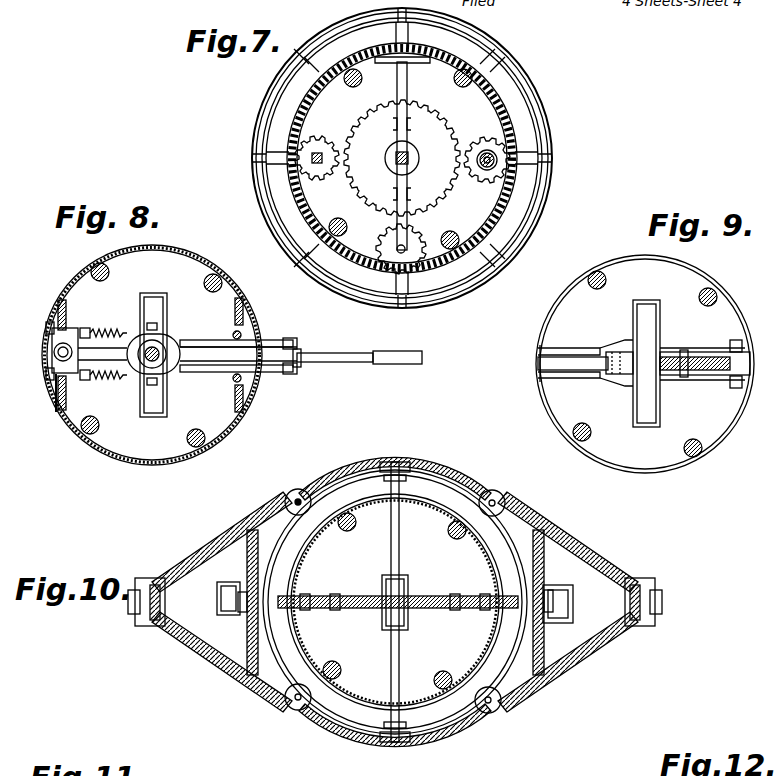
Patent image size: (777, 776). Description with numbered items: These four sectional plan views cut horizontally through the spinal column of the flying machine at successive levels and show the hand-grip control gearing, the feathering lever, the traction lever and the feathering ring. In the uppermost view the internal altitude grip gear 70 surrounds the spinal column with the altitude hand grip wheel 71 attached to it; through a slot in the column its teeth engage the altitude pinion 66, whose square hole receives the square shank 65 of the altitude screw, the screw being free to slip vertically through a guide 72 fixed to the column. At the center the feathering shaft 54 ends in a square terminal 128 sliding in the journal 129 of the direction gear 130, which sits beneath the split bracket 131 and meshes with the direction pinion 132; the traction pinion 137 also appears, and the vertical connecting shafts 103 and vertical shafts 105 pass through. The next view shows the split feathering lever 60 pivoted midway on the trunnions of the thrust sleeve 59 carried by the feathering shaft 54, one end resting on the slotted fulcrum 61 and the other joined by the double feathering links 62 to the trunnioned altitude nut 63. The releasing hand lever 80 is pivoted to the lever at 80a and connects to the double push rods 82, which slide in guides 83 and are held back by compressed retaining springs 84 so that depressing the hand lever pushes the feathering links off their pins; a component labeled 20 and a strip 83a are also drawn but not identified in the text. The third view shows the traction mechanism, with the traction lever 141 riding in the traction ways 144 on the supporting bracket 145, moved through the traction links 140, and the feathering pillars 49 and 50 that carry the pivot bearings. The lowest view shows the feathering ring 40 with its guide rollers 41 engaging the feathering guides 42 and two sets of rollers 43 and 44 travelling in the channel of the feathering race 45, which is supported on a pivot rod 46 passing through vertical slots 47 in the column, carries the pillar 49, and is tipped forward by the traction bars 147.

In FIG. 7, the casing plate 20 is at (306, 112).
In FIG. 8, the casing plate 20 is at (148, 462).
In FIG. 9, the casing plate 20 is at (643, 470).
In FIG. 10, the casing plate 20 is at (304, 540).
In FIG. 10, the feathering ring 40 is at (580, 655).
In FIG. 10, the guide rollers 41 is at (550, 592).
In FIG. 10, the feathering guides 42 is at (573, 604).
In FIG. 10, the rollers 43 is at (410, 740).
In FIG. 10, the rollers 44 is at (492, 712).
In FIG. 10, the feathering race 45 is at (352, 730).
In FIG. 10, the pivot rod 46 is at (400, 642).
In FIG. 10, the vertical slots 47 is at (390, 720).
In FIG. 9, the feathering pillars 49 is at (648, 300).
In FIG. 10, the feathering pillars 49 is at (408, 582).
In FIG. 8, the feathering pillars 50 is at (153, 293).
In FIG. 8, the feathering shaft 54 is at (158, 360).
In FIG. 8, the thrust sleeve 59 is at (162, 340).
In FIG. 8, the feathering lever 60 is at (148, 335).
In FIG. 8, the slotted fulcrum 61 is at (222, 345).
In FIG. 8, the double feathering links 62 is at (50, 380).
In FIG. 8, the altitude nut 63 is at (56, 400).
In FIG. 7, the square shank 65 is at (312, 156).
In FIG. 7, the altitude pinion 66 is at (308, 165).
In FIG. 7, the altitude grip gear 70 is at (504, 90).
In FIG. 7, the altitude hand grip wheel 71 is at (540, 118).
In FIG. 8, the guide 72 is at (54, 356).
In FIG. 8, the releasing hand lever 80 is at (396, 365).
In FIG. 8, the pivot 80a is at (298, 368).
In FIG. 8, the double push rods 82 is at (275, 374).
In FIG. 8, the guides 83 is at (86, 380).
In FIG. 8, the strip 83a is at (63, 410).
In FIG. 8, the retaining springs 84 is at (108, 378).
In FIG. 7, the vertical connecting shafts 103 is at (460, 250).
In FIG. 8, the vertical connecting shafts 103 is at (215, 462).
In FIG. 9, the vertical connecting shafts 103 is at (705, 470).
In FIG. 10, the vertical connecting shafts 103 is at (446, 680).
In FIG. 7, the vertical shafts 105 is at (338, 219).
In FIG. 8, the vertical shafts 105 is at (82, 432).
In FIG. 9, the vertical shafts 105 is at (585, 427).
In FIG. 10, the vertical shafts 105 is at (334, 662).
In FIG. 7, the terminal 128 is at (402, 158).
In FIG. 7, the journal 129 is at (412, 167).
In FIG. 7, the direction gear 130 is at (487, 160).
In FIG. 7, the split bracket 131 is at (413, 125).
In FIG. 7, the direction pinion 132 is at (418, 236).
In FIG. 7, the traction pinion 137 is at (484, 140).
In FIG. 8, the traction links 140 is at (242, 380).
In FIG. 9, the traction lever 141 is at (690, 382).
In FIG. 9, the traction ways 144 is at (620, 376).
In FIG. 9, the supporting bracket 145 is at (574, 346).
In FIG. 10, the traction bars 147 is at (436, 610).